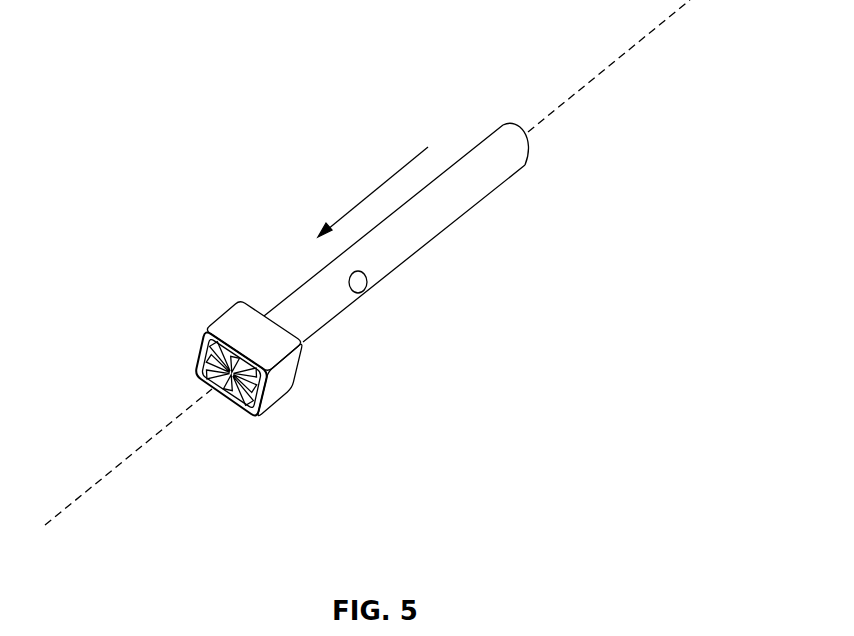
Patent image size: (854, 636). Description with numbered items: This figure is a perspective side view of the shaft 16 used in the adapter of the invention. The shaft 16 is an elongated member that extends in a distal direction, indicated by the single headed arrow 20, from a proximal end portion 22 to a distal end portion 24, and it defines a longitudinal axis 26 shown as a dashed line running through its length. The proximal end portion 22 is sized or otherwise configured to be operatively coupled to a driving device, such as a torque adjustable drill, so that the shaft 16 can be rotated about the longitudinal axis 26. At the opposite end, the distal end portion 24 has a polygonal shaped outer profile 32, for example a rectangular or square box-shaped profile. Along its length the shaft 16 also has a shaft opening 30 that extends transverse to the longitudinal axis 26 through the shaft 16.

The shaft 16 is at (465, 198).
The single headed arrow 20 is at (377, 188).
The proximal end portion 22 is at (517, 163).
The distal end portion 24 is at (280, 388).
The longitudinal axis 26 is at (638, 43).
The shaft opening 30 is at (364, 290).
The polygonal shaped outer profile 32 is at (238, 328).